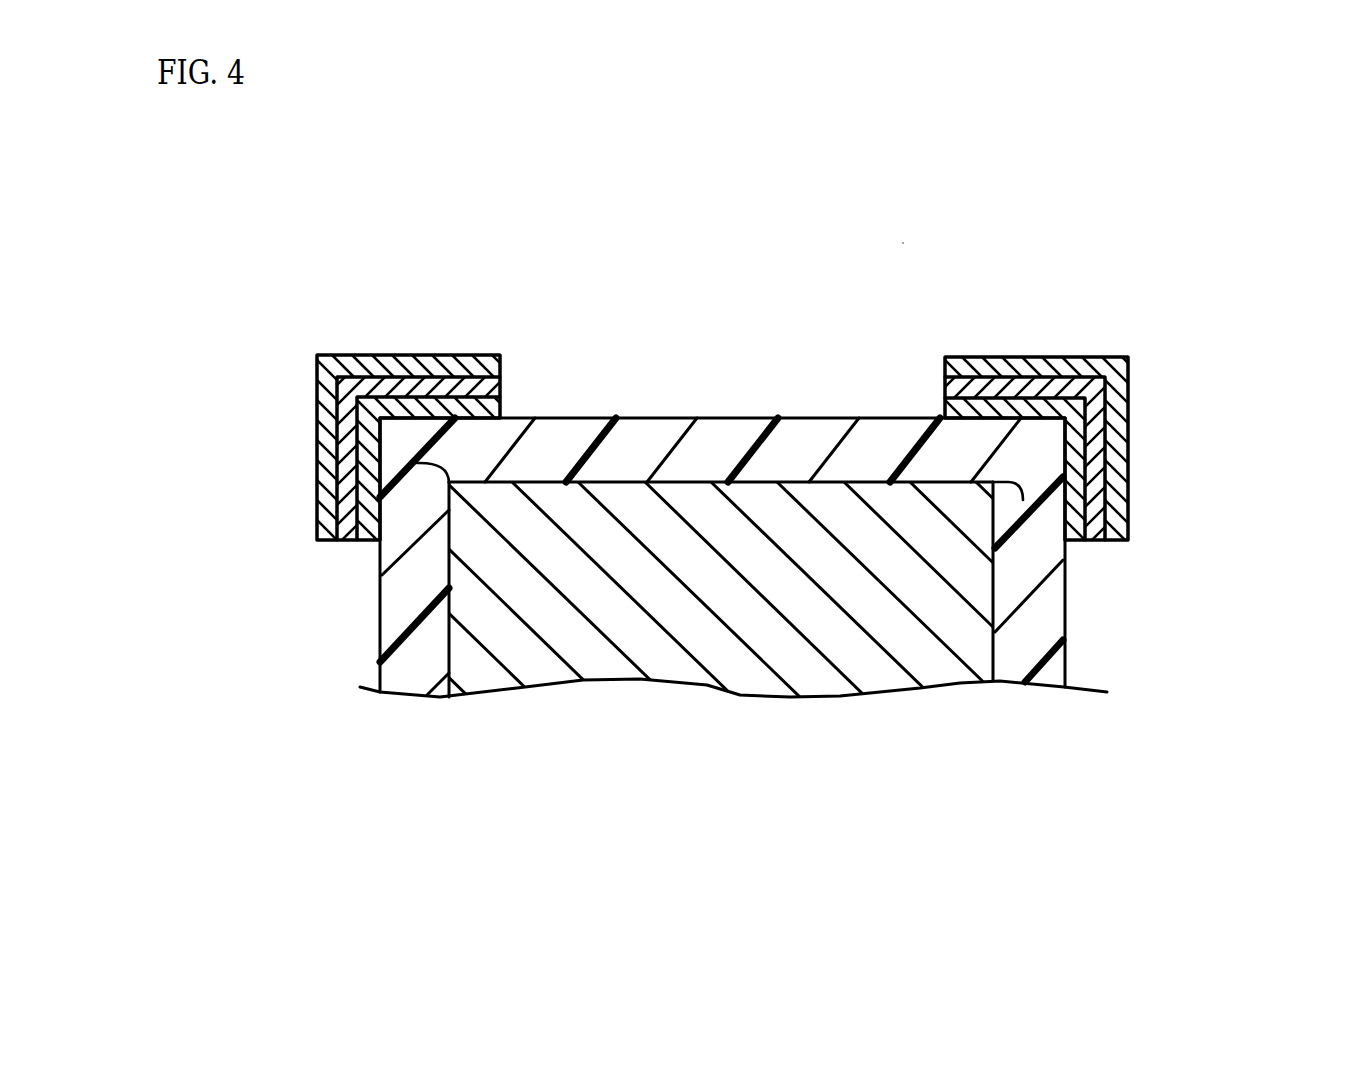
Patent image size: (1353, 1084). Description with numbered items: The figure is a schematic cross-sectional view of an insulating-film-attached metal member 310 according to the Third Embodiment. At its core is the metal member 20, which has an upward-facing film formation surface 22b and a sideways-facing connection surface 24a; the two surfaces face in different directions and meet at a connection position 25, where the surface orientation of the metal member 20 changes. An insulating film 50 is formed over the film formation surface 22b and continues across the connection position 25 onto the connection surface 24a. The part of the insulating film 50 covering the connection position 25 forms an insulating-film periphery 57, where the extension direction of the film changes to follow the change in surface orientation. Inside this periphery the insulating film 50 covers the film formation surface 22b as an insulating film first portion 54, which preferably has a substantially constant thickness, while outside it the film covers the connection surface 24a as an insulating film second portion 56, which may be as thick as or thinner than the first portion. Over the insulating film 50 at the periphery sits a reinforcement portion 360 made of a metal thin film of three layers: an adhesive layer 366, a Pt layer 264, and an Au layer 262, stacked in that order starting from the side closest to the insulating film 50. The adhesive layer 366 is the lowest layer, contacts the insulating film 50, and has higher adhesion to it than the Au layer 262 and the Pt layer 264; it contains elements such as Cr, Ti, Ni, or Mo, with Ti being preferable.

The insulating-film-attached metal member 310 is at (908, 228).
The reinforcement portion 360 is at (316, 313).
The Au layer 262 is at (362, 362).
The Pt layer 264 is at (408, 383).
The adhesive layer 366 is at (497, 395).
The insulating-film periphery 57 is at (303, 408).
The insulating film second portion 56 is at (402, 585).
The insulating film 50 is at (655, 435).
The insulating film first portion 54 is at (793, 440).
The film formation surface 22b is at (693, 481).
The connection position 25 is at (383, 487).
The connection surface 24a is at (380, 660).
The metal member 20 is at (786, 675).